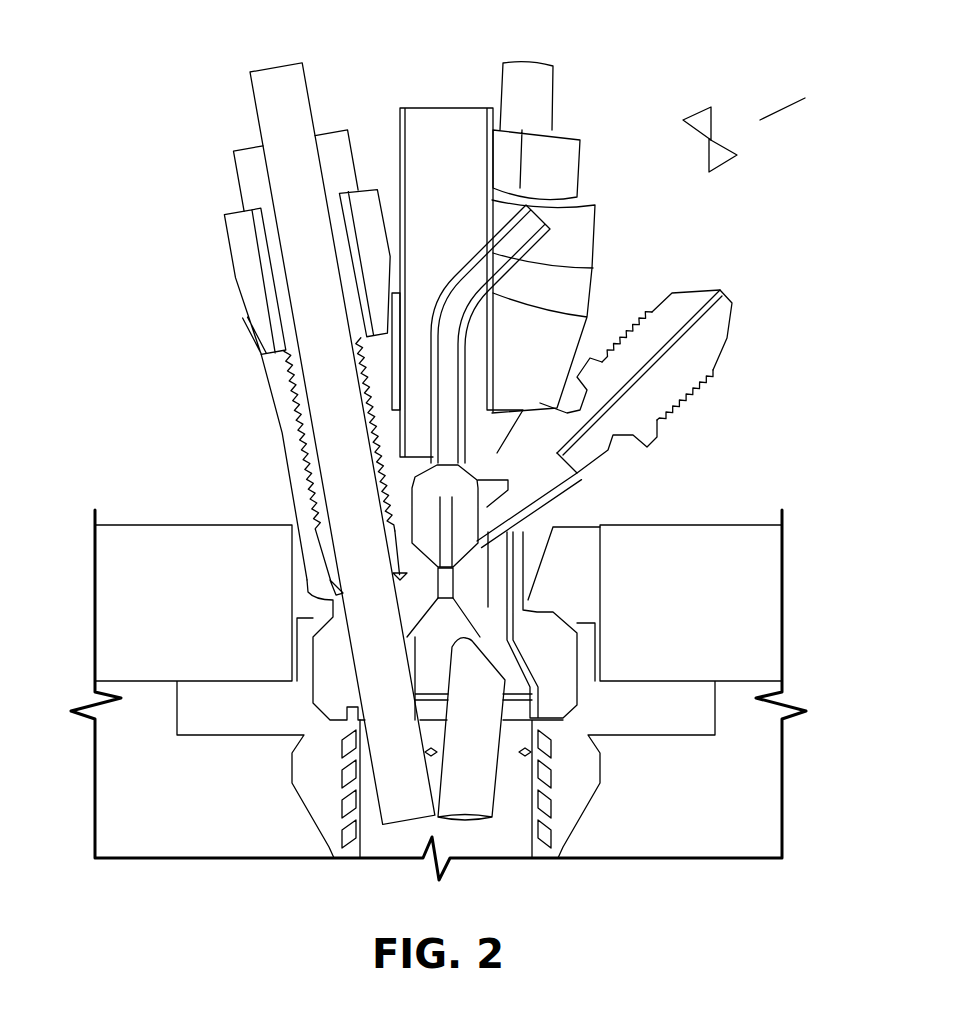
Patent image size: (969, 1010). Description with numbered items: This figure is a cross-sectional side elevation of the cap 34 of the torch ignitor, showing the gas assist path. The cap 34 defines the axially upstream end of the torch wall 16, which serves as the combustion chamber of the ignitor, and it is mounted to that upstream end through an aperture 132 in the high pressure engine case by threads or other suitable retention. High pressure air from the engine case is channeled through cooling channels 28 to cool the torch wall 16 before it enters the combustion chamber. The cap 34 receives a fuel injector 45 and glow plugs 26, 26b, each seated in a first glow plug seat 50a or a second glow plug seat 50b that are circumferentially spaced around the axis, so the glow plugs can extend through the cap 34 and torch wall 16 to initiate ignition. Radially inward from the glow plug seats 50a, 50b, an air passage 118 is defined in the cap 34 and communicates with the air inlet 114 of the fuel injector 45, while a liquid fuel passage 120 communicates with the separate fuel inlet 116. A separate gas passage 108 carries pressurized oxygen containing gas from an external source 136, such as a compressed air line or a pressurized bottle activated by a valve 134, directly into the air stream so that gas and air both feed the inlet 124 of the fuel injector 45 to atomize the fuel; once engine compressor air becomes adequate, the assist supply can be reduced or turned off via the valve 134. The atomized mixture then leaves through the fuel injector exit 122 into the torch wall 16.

The torch wall 16 is at (510, 835).
The glow plug 26 is at (278, 82).
The second glow plug 26b is at (543, 78).
The cooling channels 28 is at (355, 833).
The cap 34 is at (226, 420).
The fuel injector 45 is at (447, 582).
The first glow plug seat 50a is at (243, 250).
The second glow plug seat 50b is at (553, 183).
The gas passage 108 is at (541, 221).
The air inlet 114 is at (476, 508).
The fuel inlet 116 is at (679, 364).
The air passage 118 is at (458, 254).
The liquid fuel passage 120 is at (699, 335).
The fuel injector exit 122 is at (486, 549).
The inlet 124 is at (600, 362).
The aperture 132 is at (316, 605).
The valve 134 is at (708, 112).
The external source 136 is at (784, 116).